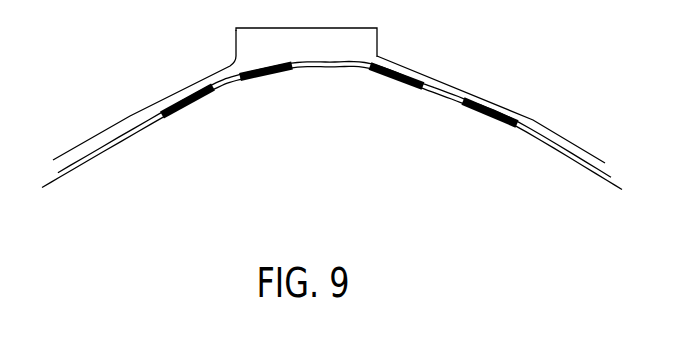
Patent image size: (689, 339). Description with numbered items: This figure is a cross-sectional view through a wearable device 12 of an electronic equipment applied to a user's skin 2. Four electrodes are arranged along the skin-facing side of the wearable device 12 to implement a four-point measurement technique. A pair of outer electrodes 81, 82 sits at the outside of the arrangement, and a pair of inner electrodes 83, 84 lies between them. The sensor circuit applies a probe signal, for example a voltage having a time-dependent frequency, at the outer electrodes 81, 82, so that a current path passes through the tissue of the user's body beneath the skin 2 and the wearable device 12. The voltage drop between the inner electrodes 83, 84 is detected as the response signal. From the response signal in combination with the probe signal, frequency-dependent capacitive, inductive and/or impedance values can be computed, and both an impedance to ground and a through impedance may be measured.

The user's skin 2 is at (142, 129).
The wearable device 12 is at (377, 47).
The outer electrode 81 is at (187, 110).
The outer electrode 82 is at (492, 121).
The inner electrode 83 is at (263, 78).
The inner electrode 84 is at (397, 88).